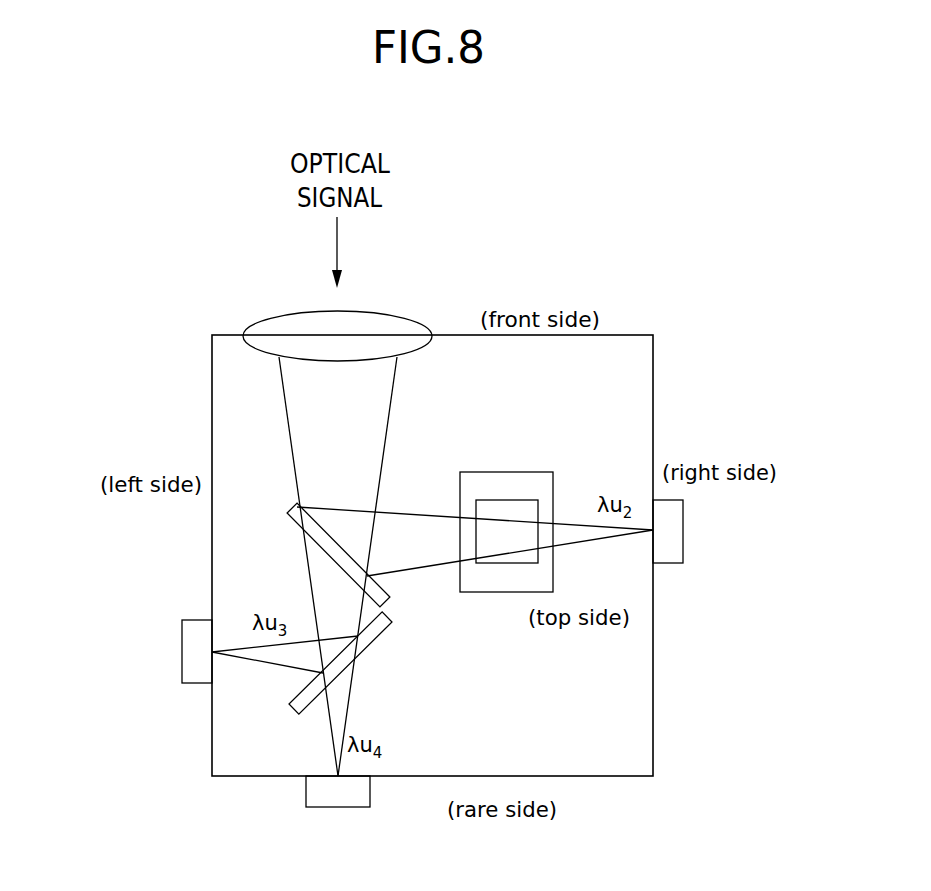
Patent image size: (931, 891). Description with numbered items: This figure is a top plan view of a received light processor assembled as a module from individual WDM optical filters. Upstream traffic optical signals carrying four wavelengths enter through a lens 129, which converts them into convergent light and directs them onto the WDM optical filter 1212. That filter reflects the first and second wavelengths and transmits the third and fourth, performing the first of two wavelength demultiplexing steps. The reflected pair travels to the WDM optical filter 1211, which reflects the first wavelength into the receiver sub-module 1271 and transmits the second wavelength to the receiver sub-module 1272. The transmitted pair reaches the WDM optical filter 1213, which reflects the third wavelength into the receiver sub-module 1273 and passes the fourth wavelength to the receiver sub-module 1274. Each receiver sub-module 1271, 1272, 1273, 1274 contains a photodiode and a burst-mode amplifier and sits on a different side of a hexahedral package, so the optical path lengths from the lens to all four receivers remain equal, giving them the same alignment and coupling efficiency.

The lens 129 is at (279, 308).
The WDM optical filter 1211 is at (373, 638).
The WDM optical filter 1212 is at (323, 551).
The WDM optical filter 1213 is at (506, 472).
The receiver sub-module 1271 is at (500, 563).
The receiver sub-module 1272 is at (683, 525).
The receiver sub-module 1273 is at (182, 650).
The receiver sub-module 1274 is at (335, 807).